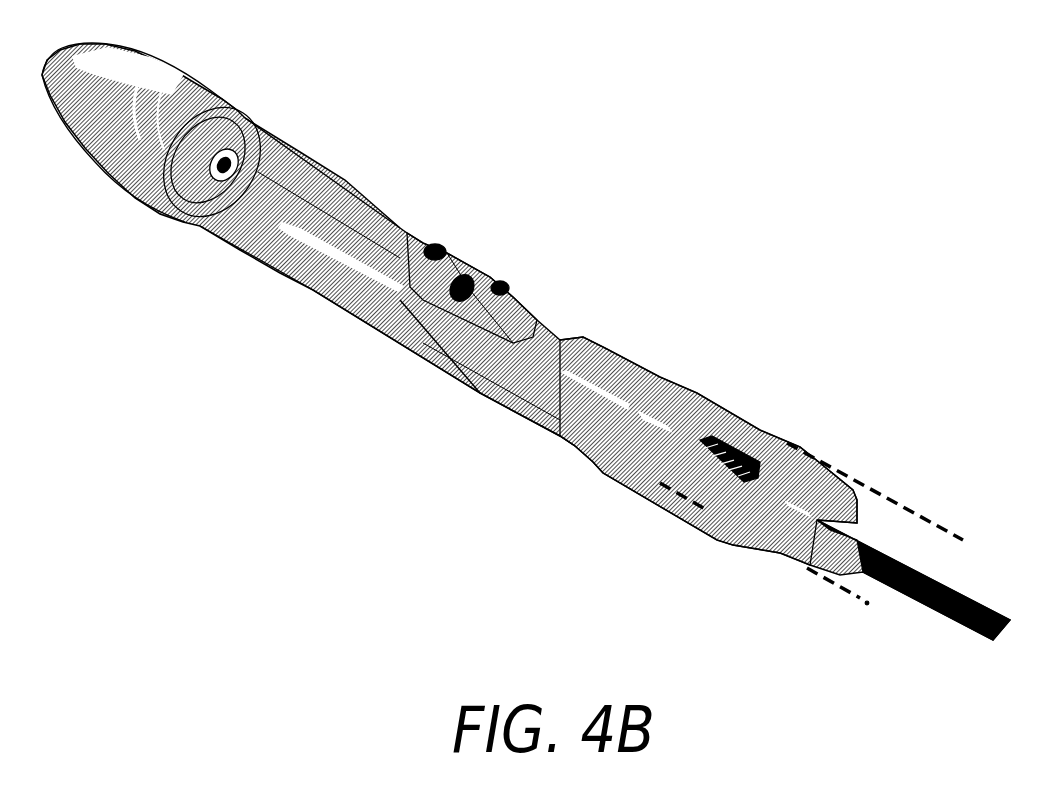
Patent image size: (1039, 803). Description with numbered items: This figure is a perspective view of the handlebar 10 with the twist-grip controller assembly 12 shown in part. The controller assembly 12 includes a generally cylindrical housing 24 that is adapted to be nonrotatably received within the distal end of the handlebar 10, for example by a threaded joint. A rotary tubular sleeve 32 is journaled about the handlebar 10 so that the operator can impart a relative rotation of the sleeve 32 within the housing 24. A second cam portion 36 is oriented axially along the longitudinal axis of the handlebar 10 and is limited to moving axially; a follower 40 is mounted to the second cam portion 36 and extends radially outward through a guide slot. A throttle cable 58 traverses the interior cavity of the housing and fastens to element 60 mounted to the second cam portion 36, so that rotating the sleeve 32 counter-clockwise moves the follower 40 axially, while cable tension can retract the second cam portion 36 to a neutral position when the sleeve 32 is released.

The handlebar 10 is at (867, 483).
The twist-grip controller assembly 12 is at (585, 288).
The housing 24 is at (187, 223).
The rotary tubular sleeve 32 is at (323, 303).
The second cam portion 36 is at (472, 273).
The follower 40 is at (432, 243).
The throttle cable 58 is at (540, 418).
The element 60 is at (423, 343).